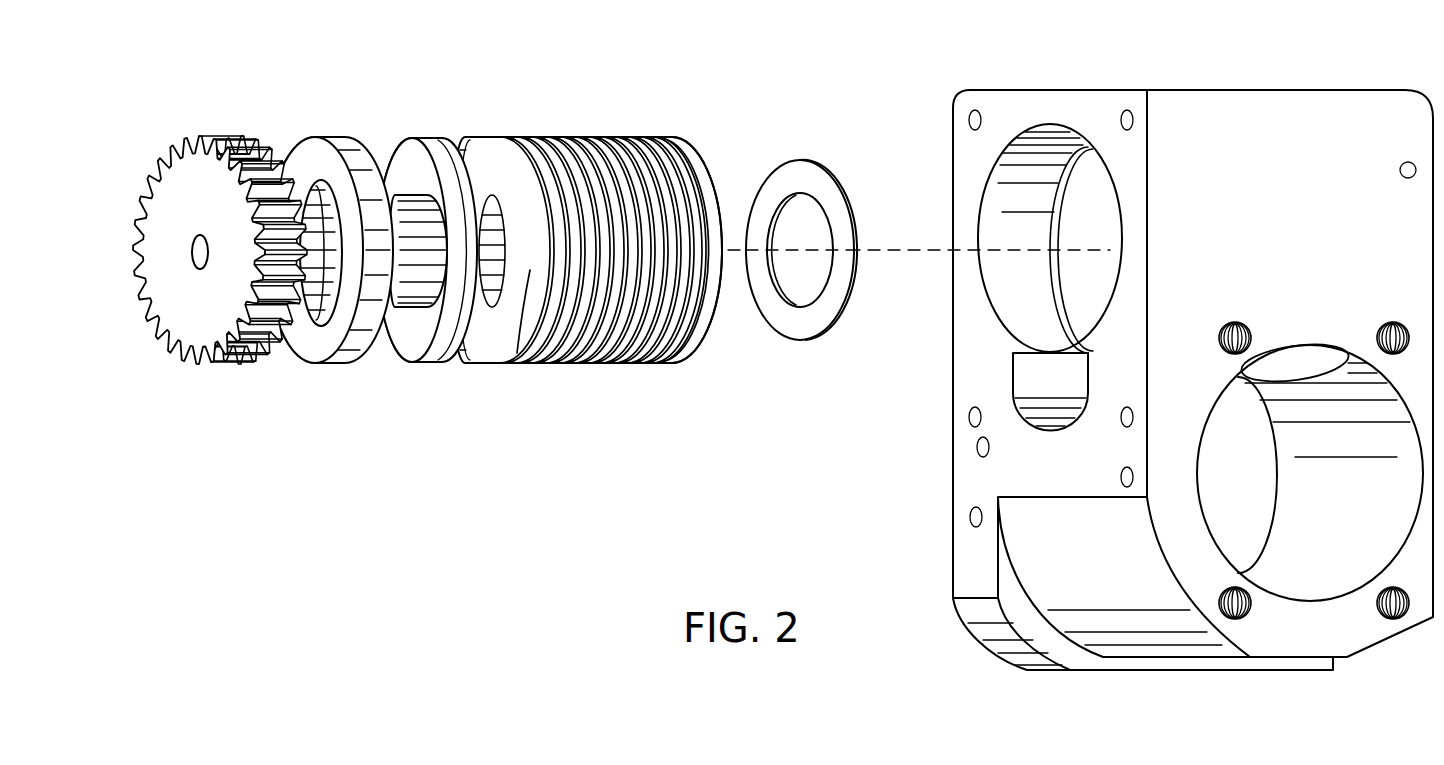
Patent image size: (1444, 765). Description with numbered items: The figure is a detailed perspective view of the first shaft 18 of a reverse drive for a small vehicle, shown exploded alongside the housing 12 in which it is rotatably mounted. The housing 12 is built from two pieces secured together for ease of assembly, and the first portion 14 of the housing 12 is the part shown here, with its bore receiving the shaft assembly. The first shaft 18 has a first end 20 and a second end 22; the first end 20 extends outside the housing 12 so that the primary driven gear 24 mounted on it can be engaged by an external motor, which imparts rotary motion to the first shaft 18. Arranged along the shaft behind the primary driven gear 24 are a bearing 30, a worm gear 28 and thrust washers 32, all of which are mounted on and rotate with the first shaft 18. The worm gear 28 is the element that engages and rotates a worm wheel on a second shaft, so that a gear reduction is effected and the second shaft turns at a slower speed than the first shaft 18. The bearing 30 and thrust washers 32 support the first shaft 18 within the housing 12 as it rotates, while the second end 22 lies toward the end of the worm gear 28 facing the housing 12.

The housing 12 is at (1330, 78).
The first portion 14 is at (1360, 637).
The first shaft 18 is at (417, 282).
The first end 20 is at (305, 310).
The second end 22 is at (717, 317).
The primary driven gear 24 is at (197, 173).
The worm gear 28 is at (562, 160).
The bearing 30 is at (357, 343).
The thrust washers 32 is at (800, 178).